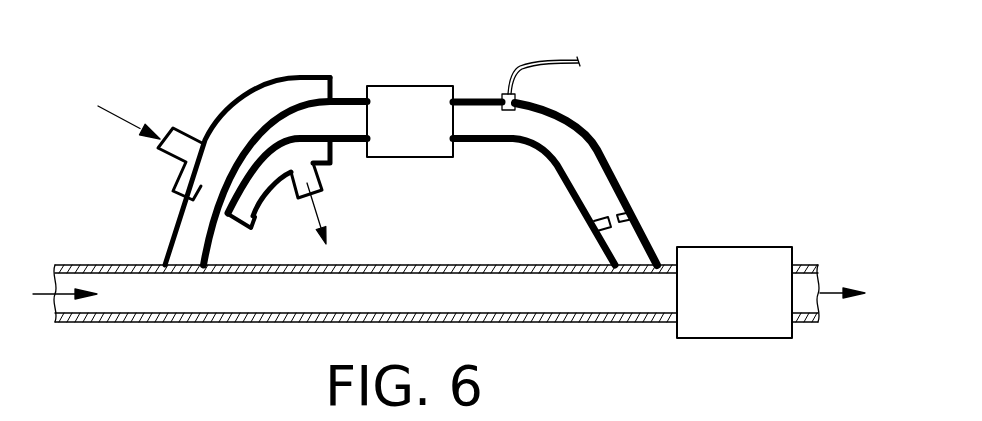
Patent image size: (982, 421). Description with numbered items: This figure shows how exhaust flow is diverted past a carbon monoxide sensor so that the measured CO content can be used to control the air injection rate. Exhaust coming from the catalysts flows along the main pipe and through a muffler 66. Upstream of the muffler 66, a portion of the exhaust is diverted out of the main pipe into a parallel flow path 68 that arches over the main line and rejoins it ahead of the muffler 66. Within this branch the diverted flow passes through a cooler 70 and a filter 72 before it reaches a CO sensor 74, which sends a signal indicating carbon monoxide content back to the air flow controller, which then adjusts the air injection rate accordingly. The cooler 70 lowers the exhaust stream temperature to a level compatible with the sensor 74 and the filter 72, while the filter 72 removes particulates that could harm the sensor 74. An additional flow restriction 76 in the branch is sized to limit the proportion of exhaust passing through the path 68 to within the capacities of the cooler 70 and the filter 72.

The muffler 66 is at (752, 307).
The parallel flow path 68 is at (414, 174).
The cooler 70 is at (248, 97).
The filter 72 is at (428, 135).
The CO sensor 74 is at (503, 95).
The flow restriction 76 is at (604, 214).